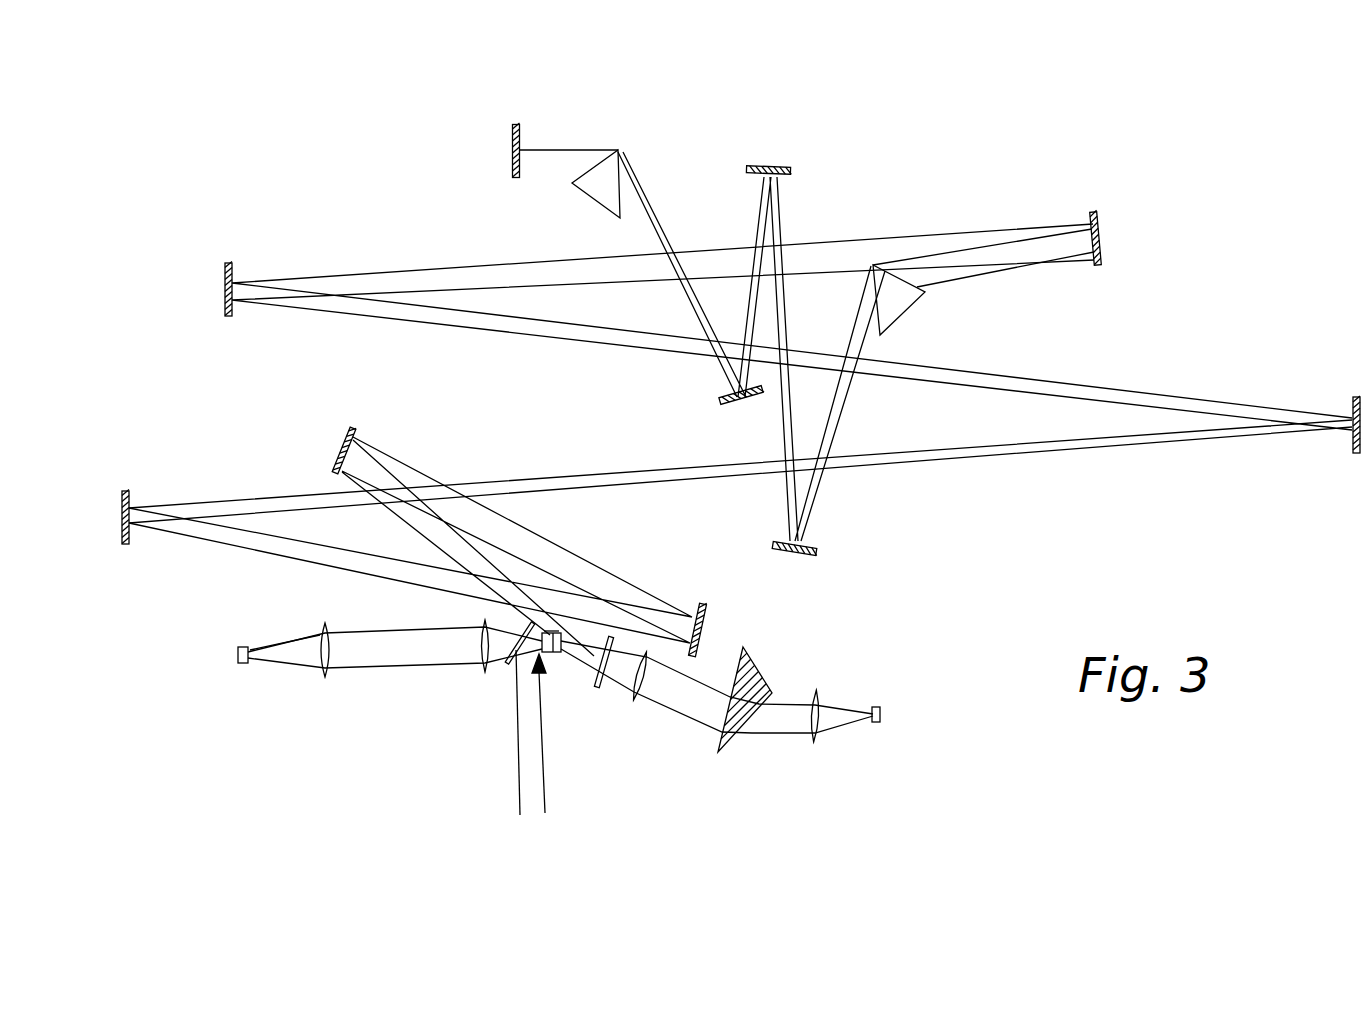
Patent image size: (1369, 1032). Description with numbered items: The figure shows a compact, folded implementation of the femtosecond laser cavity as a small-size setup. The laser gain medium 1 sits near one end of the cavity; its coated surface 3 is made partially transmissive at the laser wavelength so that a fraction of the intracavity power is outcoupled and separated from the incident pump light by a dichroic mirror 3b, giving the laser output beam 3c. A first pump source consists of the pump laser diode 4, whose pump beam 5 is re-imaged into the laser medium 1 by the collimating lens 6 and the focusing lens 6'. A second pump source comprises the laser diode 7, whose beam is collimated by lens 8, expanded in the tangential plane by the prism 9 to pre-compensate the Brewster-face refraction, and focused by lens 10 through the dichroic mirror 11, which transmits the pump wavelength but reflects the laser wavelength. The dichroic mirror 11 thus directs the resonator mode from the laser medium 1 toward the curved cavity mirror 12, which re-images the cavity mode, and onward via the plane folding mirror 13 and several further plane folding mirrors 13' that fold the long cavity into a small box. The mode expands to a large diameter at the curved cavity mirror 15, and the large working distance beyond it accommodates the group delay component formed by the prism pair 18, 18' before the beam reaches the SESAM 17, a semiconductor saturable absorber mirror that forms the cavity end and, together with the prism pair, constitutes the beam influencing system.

The laser gain medium 1 is at (562, 653).
The coated side of the laser medium 3 is at (553, 653).
The dichroic mirror 3b is at (507, 664).
The laser output beam 3c is at (523, 752).
The pump laser diode 4 is at (242, 664).
The pump beam 5 is at (307, 640).
The collimating lens 6 is at (292, 674).
The focusing lens 6' is at (444, 669).
The laser diode 7 is at (877, 722).
The collimating lens 8 is at (820, 700).
The prism 9 is at (757, 674).
The focusing lens 10 is at (655, 705).
The dichroic mirror 11 is at (603, 665).
The curved cavity mirror 12 is at (352, 430).
The plane folding mirror 13 is at (765, 622).
The plane folding mirror 13' is at (741, 335).
The cavity mirror 15 is at (1102, 229).
The SESAM 17 is at (516, 125).
The prism 18 is at (968, 300).
The prism 18' is at (530, 204).